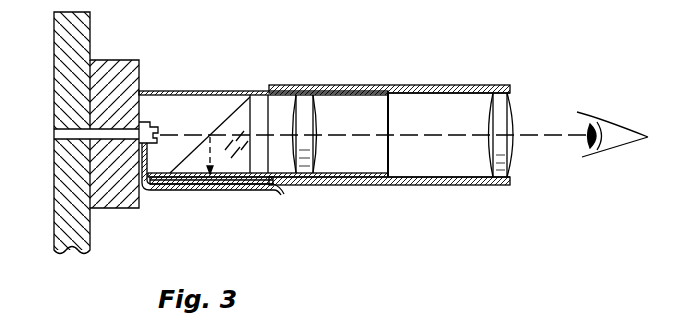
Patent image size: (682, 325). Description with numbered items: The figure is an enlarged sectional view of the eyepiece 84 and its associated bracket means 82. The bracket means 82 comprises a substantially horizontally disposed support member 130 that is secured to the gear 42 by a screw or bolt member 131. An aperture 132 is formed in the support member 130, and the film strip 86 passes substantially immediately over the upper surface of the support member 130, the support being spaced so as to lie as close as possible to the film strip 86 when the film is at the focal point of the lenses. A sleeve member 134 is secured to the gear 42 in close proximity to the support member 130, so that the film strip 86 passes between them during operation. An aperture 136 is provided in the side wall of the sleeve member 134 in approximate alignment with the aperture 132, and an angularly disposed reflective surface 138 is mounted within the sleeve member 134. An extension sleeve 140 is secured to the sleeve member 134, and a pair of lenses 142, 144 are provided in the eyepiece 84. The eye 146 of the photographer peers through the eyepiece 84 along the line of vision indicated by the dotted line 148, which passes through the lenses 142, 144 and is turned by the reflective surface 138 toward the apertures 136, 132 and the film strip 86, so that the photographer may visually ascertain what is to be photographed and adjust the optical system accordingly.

The gear 42 is at (84, 19).
The screw or bolt member 131 is at (146, 122).
The sleeve member 134 is at (191, 90).
The angularly disposed reflective surface 138 is at (254, 110).
The aperture 136 is at (201, 168).
The lens 142 is at (304, 117).
The eyepiece 84 is at (348, 108).
The extension sleeve 140 is at (425, 90).
The line of vision 148 is at (423, 137).
The lens 144 is at (500, 105).
The eye 146 is at (609, 120).
The bracket means 82 is at (157, 192).
The film strip 86 is at (185, 191).
The aperture 132 is at (230, 191).
The support member 130 is at (266, 195).